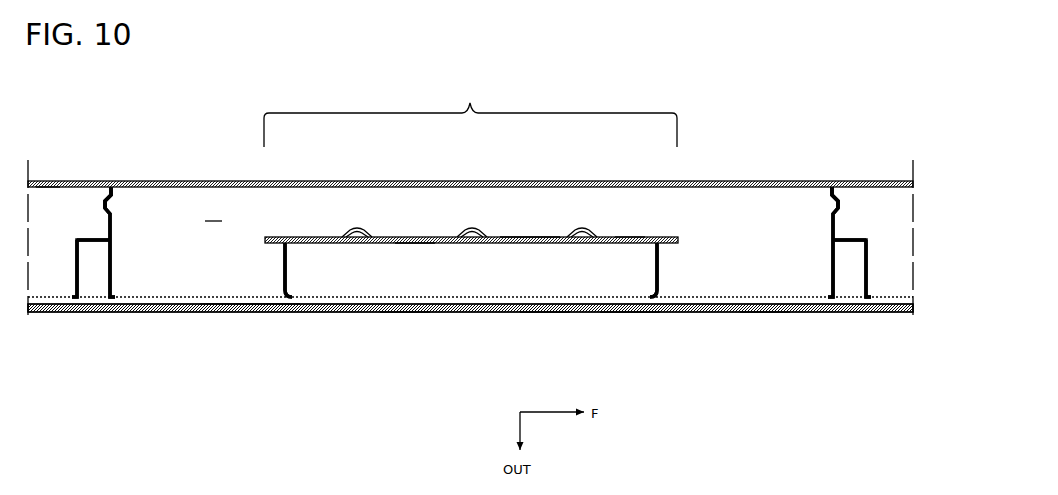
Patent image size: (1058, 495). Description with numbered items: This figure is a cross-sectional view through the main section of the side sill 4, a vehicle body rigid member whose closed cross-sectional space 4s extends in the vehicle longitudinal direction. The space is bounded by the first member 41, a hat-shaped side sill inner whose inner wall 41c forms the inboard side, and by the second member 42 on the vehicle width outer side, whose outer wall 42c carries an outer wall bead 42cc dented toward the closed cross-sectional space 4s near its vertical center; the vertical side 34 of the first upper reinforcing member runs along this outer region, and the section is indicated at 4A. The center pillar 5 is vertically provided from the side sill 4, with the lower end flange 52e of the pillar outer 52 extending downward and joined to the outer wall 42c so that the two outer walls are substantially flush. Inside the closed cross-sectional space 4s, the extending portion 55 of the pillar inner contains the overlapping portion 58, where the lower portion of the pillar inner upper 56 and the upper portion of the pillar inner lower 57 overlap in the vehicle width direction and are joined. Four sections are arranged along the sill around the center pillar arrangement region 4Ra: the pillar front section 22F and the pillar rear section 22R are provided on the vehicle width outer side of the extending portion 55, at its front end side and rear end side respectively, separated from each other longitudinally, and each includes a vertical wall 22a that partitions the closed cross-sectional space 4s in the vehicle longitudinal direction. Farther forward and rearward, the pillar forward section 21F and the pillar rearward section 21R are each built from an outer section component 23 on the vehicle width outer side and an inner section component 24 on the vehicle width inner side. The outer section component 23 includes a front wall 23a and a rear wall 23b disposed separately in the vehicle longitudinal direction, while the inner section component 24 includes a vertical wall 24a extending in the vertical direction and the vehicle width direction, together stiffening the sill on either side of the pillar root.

The side sill 4 is at (150, 314).
The first member 41 is at (150, 181).
The inner wall 41c is at (46, 189).
The second member 42 is at (193, 313).
The outer wall bead 42cc is at (176, 296).
The outer wall 42c is at (760, 313).
The vertical side 34 is at (252, 301).
The frame opening 4A is at (407, 315).
The closed cross-sectional space 4s is at (213, 213).
The center pillar arrangement region 4Ra is at (470, 99).
The lower end flange 52e is at (545, 313).
The pillar outer 52 is at (632, 316).
The pillar rearward section 21R is at (161, 221).
The pillar forward section 21F is at (780, 221).
The inner section component 24 is at (123, 215).
The vertical wall 24a is at (105, 212).
The outer section component 23 is at (125, 266).
The front wall 23a is at (113, 284).
The rear wall 23b is at (76, 272).
The center pillar 5 is at (657, 227).
The overlapping portion 58 is at (421, 236).
The extending portion 55 is at (532, 226).
The pillar inner upper 56 is at (630, 237).
The pillar inner lower 57 is at (414, 245).
The vertical wall 22a is at (289, 250).
The pillar rear section 22R is at (267, 276).
The pillar front section 22F is at (670, 271).